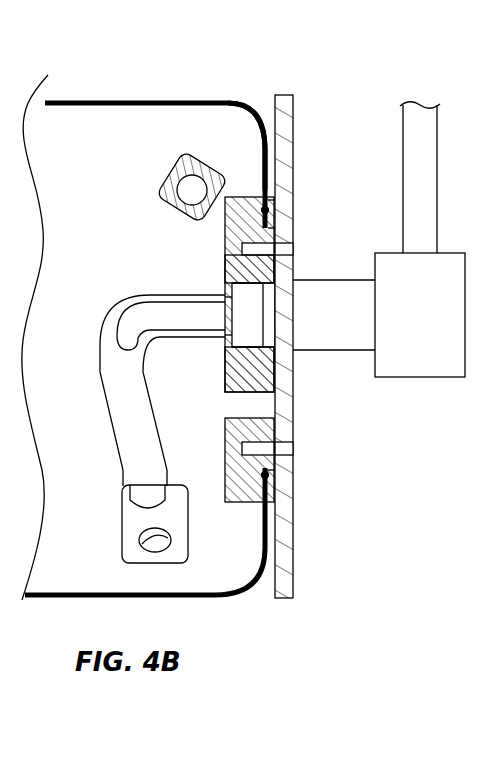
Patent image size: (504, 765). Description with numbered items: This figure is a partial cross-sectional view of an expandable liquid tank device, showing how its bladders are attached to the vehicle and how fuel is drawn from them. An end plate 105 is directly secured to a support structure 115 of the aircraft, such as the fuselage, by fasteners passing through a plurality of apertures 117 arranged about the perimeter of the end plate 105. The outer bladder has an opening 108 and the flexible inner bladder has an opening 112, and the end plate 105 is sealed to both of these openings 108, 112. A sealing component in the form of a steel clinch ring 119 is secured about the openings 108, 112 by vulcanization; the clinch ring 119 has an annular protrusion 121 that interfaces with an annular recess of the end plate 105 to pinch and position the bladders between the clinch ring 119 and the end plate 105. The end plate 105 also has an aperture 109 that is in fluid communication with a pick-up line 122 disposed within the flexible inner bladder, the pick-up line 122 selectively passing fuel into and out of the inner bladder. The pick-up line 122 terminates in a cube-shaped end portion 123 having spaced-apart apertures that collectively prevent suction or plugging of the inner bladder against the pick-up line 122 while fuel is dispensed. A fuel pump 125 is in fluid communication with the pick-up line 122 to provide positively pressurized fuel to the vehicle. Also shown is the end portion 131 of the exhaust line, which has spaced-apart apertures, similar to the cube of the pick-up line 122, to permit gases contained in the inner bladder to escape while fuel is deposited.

The opening 108 is at (240, 612).
The opening 112 is at (246, 146).
The support structure 115 is at (294, 108).
The apertures 117 is at (293, 250).
The clinch ring 119 is at (272, 212).
The annular protrusion 121 is at (238, 208).
The end plate 105 is at (232, 268).
The aperture 109 is at (292, 350).
The fuel pump 125 is at (396, 378).
The end portion 131 is at (160, 203).
The pick-up line 122 is at (122, 430).
The end portion 123 is at (128, 527).